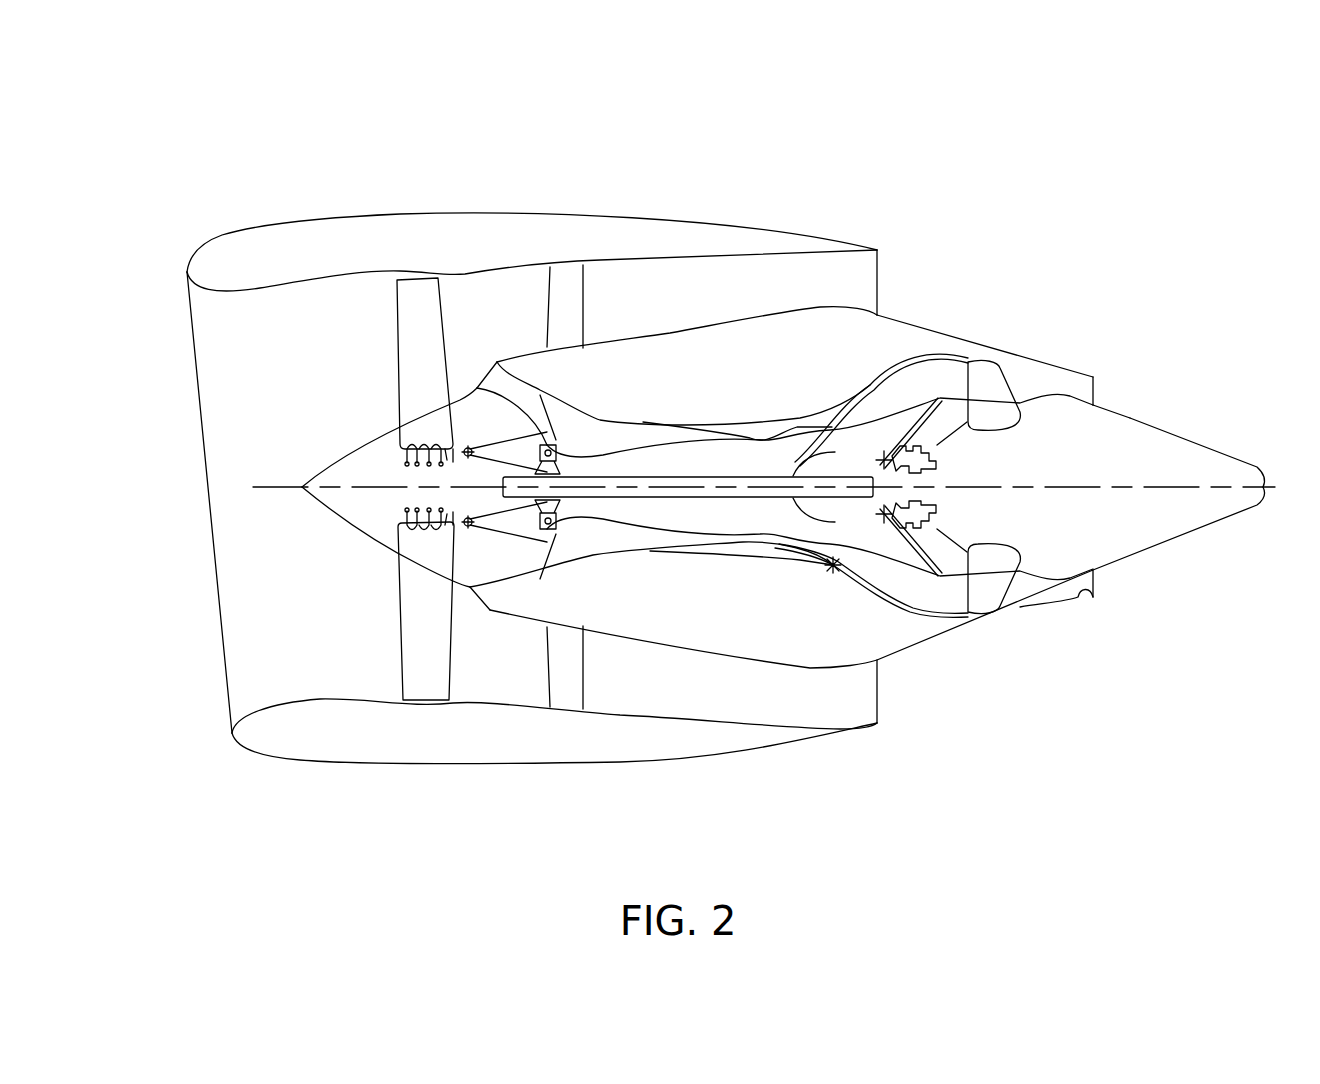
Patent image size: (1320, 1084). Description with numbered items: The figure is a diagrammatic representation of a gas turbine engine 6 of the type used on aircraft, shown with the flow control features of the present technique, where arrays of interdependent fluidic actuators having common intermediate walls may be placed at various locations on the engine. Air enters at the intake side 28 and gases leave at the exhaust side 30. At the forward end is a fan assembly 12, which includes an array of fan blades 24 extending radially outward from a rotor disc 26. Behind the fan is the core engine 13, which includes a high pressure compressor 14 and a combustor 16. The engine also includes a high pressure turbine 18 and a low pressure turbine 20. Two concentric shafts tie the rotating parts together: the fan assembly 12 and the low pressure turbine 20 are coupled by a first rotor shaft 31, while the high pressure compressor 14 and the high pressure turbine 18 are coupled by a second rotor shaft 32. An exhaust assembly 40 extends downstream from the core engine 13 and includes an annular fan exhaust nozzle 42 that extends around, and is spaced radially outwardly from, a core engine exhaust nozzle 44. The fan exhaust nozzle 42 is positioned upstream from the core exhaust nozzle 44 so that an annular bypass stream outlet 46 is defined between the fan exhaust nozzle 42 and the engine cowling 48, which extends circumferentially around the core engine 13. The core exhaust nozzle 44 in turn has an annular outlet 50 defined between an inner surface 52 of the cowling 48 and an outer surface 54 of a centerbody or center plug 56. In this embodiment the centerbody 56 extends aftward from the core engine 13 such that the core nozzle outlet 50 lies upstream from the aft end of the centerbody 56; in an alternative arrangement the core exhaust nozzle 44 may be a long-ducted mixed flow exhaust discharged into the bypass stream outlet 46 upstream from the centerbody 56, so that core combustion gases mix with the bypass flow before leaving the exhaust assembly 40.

The gas turbine engine 6 is at (1180, 115).
The fan assembly 12 is at (521, 598).
The core engine 13 is at (760, 352).
The high pressure compressor 14 is at (620, 437).
The combustor 16 is at (780, 425).
The high pressure turbine 18 is at (829, 568).
The low pressure turbine 20 is at (915, 372).
The fan blades 24 is at (401, 339).
The rotor disc 26 is at (364, 441).
The intake side 28 is at (170, 300).
The exhaust side 30 is at (921, 250).
The first rotor shaft 31 is at (572, 470).
The second rotor shaft 32 is at (790, 472).
The exhaust assembly 40 is at (1064, 240).
The annular fan exhaust nozzle 42 is at (873, 243).
The core engine exhaust nozzle 44 is at (1053, 366).
The annular bypass stream outlet 46 is at (880, 291).
The engine cowling 48 is at (943, 334).
The annular outlet 50 is at (1110, 394).
The inner surface 52 is at (1095, 590).
The outer surface 54 is at (1198, 441).
The centerbody 56 is at (1212, 471).